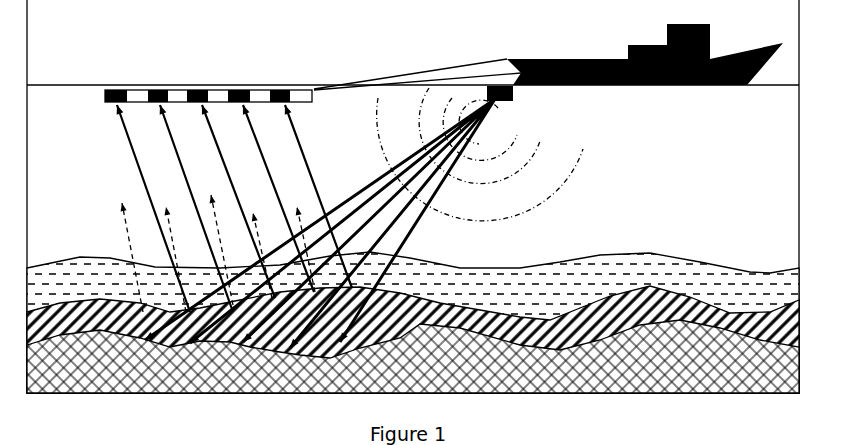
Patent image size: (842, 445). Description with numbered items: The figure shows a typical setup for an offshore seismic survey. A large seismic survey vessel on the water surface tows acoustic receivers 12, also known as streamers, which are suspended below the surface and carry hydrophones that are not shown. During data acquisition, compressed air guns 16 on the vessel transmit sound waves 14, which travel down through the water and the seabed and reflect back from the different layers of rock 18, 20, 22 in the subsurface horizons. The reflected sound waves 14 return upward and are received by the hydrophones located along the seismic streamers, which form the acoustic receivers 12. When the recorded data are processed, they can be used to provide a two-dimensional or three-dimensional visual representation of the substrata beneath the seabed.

The acoustic receivers 12 is at (165, 88).
The sound waves 14 is at (540, 148).
The compressed air guns 16 is at (492, 92).
The layer of rock 18 is at (610, 263).
The layer of rock 20 is at (650, 297).
The layer of rock 22 is at (700, 322).